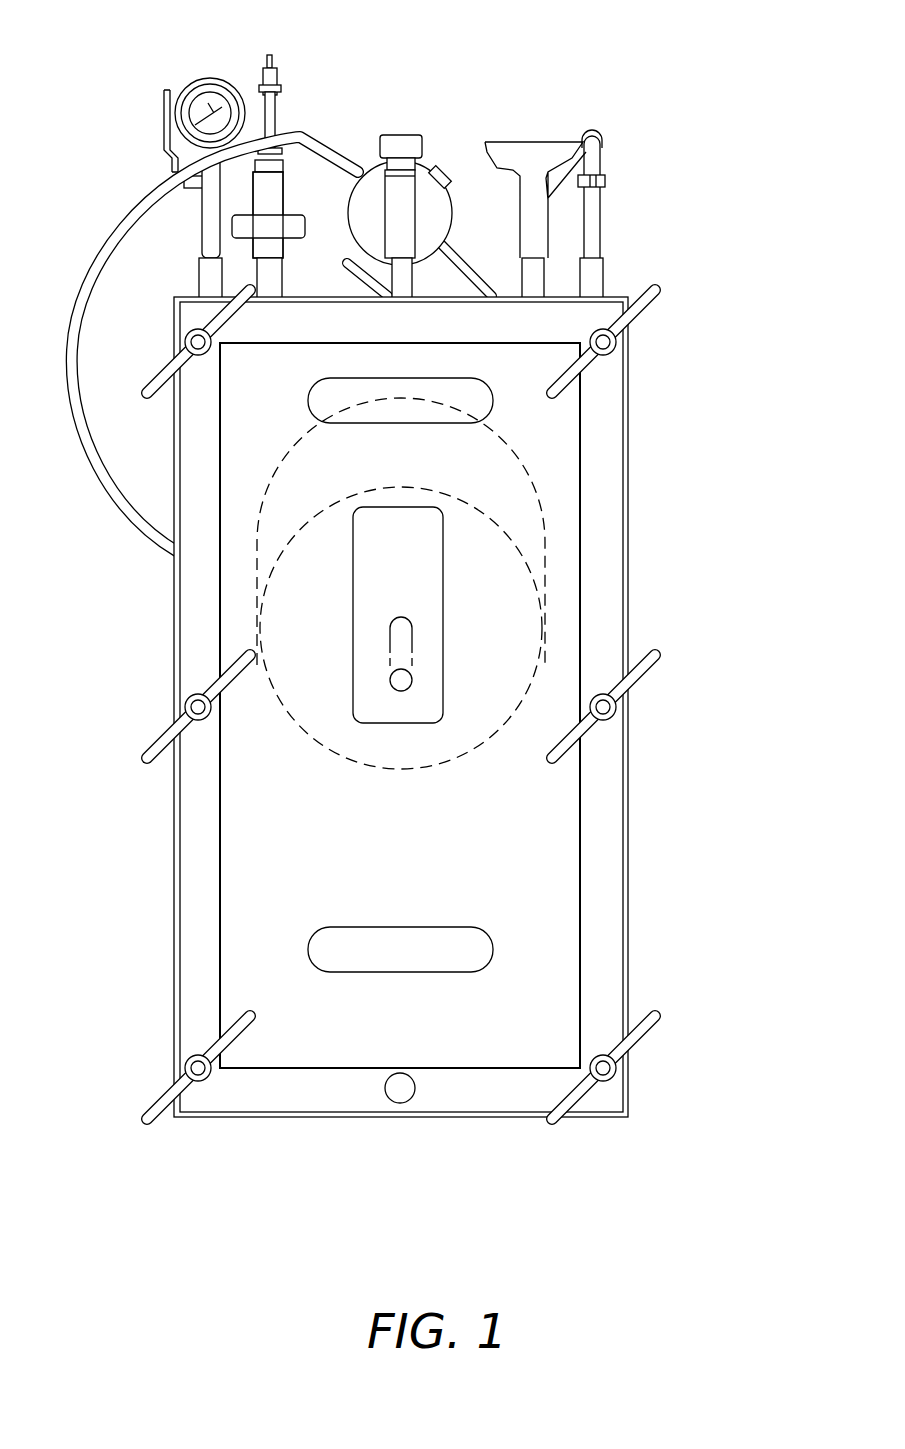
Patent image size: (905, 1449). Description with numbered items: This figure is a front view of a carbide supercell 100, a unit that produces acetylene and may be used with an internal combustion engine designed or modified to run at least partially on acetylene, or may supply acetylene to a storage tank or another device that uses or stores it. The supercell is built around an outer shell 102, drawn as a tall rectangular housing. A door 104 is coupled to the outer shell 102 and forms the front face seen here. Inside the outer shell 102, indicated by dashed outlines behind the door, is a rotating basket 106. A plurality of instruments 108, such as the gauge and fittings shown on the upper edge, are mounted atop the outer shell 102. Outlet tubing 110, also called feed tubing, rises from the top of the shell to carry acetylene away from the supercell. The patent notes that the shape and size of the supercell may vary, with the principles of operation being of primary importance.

The carbide supercell 100 is at (406, 563).
The outer shell 102 is at (628, 466).
The door 104 is at (603, 573).
The rotating basket 106 is at (507, 515).
The plurality of instruments 108 is at (157, 117).
The outlet tubing 110 is at (602, 223).